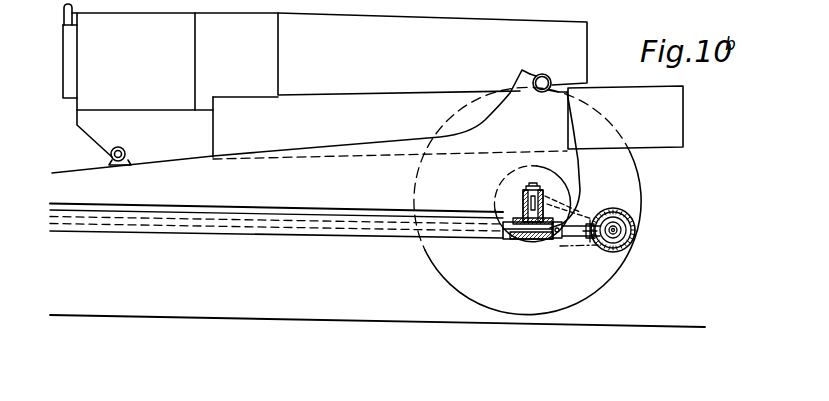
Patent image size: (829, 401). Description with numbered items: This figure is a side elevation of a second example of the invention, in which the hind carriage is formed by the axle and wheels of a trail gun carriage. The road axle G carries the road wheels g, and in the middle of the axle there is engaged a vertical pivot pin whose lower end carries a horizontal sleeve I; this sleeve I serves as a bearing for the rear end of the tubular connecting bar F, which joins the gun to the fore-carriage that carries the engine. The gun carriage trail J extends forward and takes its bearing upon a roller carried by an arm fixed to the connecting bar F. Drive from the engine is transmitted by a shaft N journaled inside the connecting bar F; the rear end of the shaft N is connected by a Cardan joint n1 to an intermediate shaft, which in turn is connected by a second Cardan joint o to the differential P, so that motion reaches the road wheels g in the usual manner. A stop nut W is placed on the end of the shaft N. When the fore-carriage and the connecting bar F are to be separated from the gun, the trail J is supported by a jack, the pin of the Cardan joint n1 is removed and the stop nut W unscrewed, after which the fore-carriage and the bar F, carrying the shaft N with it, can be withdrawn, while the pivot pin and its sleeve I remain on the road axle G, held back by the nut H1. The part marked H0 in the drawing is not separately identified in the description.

The gun carriage trail J is at (300, 202).
The connecting bar F is at (115, 230).
The shaft N is at (62, 224).
The wheels g is at (458, 278).
The support arm H0 is at (577, 227).
The road axle G is at (525, 199).
The nut H1 is at (533, 193).
The horizontal sleeve I is at (528, 239).
The stop nut W is at (548, 242).
The Cardan joint n1 is at (557, 238).
The Cardan joint o is at (592, 239).
The differential P is at (645, 219).